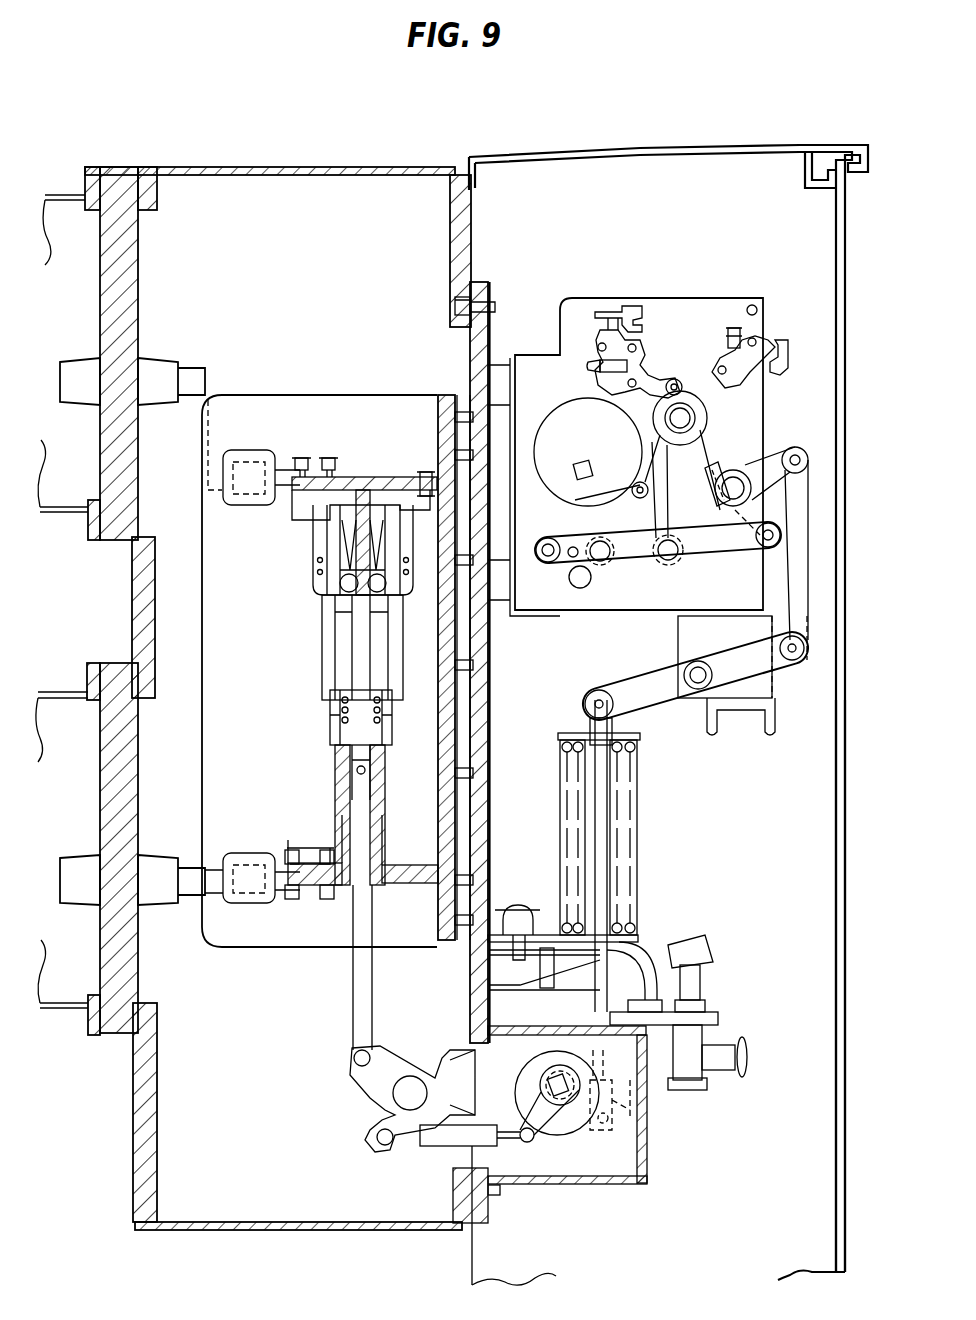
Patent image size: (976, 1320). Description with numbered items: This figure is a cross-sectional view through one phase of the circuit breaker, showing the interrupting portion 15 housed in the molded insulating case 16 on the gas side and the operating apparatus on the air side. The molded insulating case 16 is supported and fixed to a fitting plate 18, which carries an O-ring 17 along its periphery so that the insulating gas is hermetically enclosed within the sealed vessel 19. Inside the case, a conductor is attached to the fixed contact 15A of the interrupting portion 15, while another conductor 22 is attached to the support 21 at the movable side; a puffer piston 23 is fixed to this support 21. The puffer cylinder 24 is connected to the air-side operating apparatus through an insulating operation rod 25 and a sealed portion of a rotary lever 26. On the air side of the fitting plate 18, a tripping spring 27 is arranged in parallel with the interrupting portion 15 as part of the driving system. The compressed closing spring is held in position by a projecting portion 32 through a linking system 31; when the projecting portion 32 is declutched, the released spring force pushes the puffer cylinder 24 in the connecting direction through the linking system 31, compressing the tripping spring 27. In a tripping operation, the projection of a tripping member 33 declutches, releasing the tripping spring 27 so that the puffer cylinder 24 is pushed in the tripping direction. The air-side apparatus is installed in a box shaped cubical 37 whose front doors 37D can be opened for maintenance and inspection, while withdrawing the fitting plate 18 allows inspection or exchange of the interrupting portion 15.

The interrupting portion 15 is at (388, 452).
The fixed contact 15A is at (358, 477).
The molded insulating case 16 is at (255, 398).
The O-ring 17 is at (503, 1203).
The fitting plate 18 is at (470, 305).
The sealed vessel 19 is at (250, 1232).
The support 21 is at (335, 803).
The conductor 22 is at (300, 900).
The puffer piston 23 is at (330, 728).
The puffer cylinder 24 is at (295, 505).
The insulating operation rod 25 is at (350, 1030).
The rotary lever 26 is at (555, 1130).
The tripping spring 27 is at (640, 832).
The linking system 31 is at (735, 438).
The projecting portion 32 is at (760, 350).
The tripping member 33 is at (625, 300).
The box shaped cubical 37 is at (790, 150).
The front doors 37D is at (846, 778).